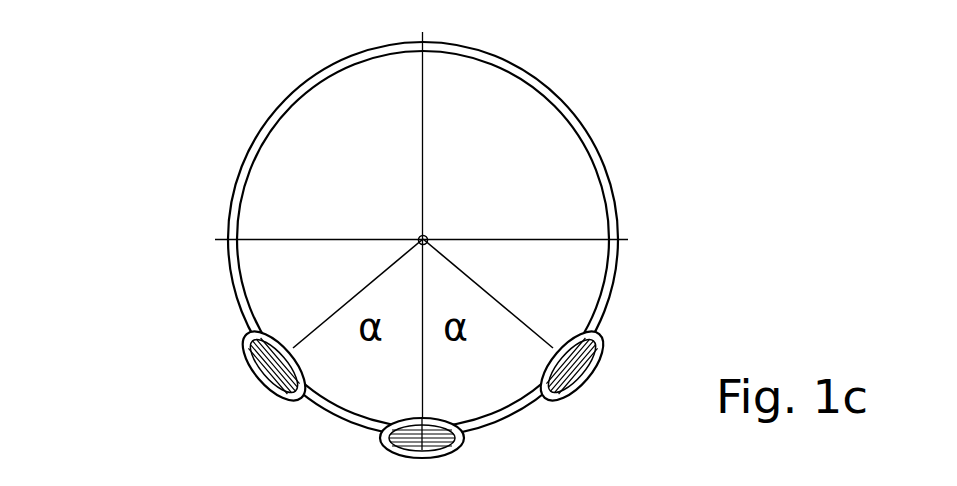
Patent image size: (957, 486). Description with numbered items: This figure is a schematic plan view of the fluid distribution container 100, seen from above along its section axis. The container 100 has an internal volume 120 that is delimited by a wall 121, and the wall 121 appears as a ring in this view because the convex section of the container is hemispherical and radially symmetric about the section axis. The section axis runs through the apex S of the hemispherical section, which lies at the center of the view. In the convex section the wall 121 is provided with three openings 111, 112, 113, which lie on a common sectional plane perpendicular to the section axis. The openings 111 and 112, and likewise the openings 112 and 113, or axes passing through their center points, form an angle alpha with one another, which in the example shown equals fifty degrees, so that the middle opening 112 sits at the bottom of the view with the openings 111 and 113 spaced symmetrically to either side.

The fluid distribution container 100 is at (153, 96).
The internal volume 120 is at (480, 66).
The wall 121 is at (585, 128).
The opening 111 is at (250, 362).
The opening 112 is at (378, 442).
The opening 113 is at (594, 370).
The apex S is at (418, 233).